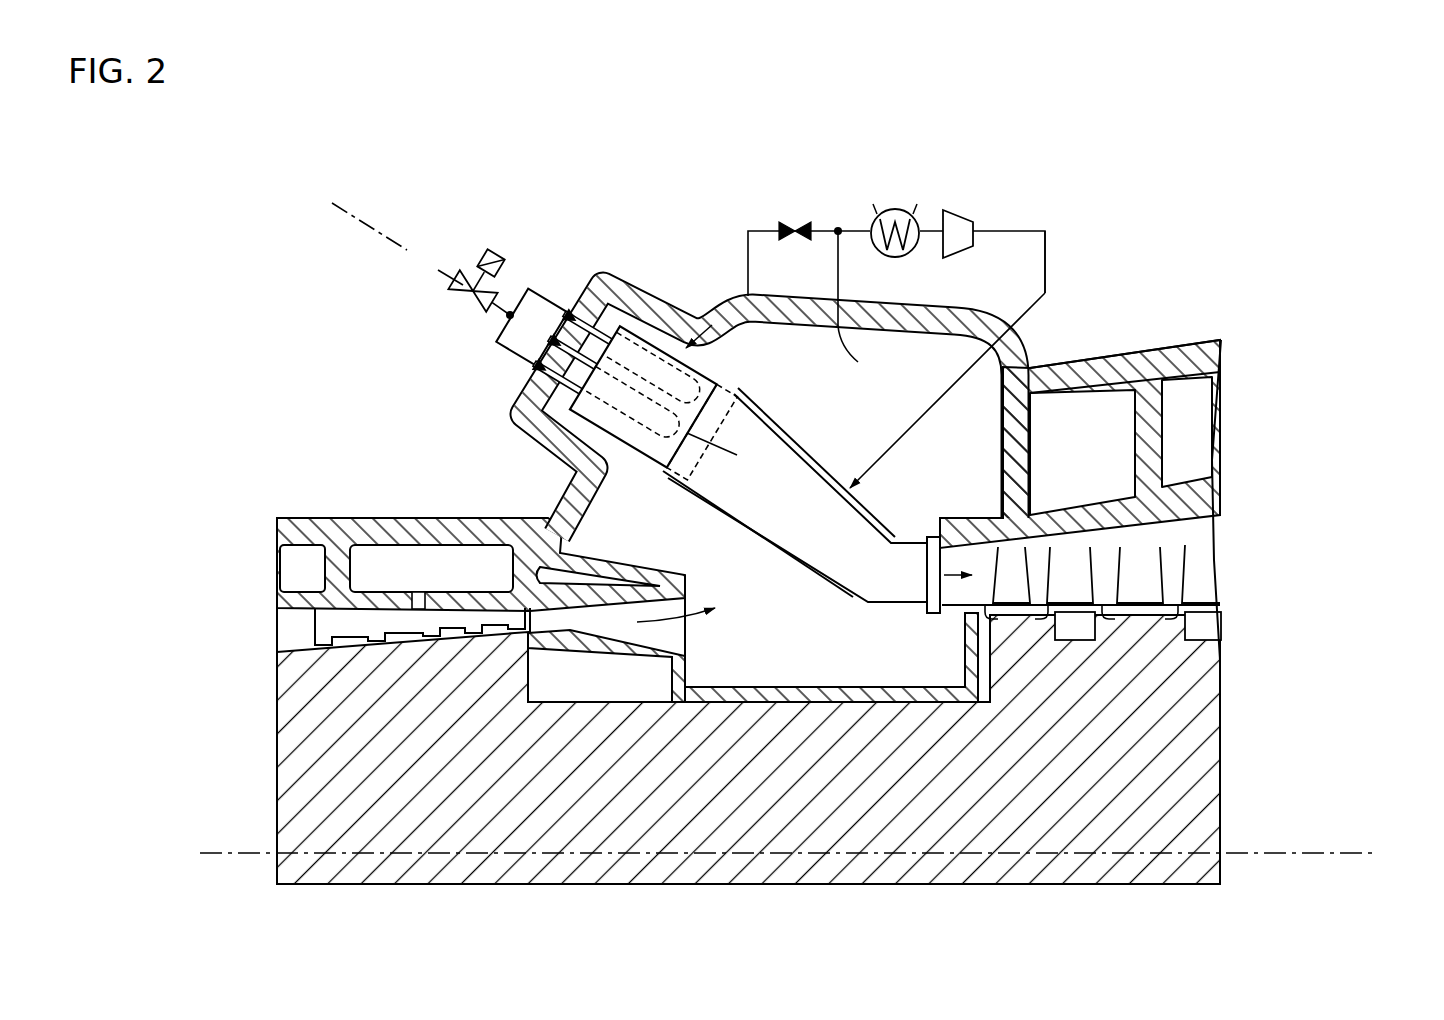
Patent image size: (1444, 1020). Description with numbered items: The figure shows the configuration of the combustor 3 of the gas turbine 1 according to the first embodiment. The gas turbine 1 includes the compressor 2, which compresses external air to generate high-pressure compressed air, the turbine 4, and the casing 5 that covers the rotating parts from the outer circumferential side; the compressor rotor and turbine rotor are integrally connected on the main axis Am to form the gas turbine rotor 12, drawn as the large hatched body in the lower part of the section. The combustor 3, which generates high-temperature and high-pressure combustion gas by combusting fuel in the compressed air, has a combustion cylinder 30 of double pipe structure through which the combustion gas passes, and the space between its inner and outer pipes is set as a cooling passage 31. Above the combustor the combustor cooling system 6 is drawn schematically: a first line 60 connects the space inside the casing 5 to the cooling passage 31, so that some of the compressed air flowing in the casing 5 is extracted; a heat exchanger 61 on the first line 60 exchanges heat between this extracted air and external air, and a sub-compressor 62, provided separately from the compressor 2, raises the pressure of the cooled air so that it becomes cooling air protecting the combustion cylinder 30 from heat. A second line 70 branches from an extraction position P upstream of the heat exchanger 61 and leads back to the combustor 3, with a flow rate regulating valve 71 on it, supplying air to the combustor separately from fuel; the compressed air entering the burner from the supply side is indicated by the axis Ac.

The gas turbine 1 is at (246, 172).
The compressor 2 is at (328, 497).
The combustor 3 is at (920, 488).
The turbine 4 is at (1231, 260).
The casing 5 is at (1190, 343).
The combustor cooling system 6 is at (939, 265).
The gas turbine rotor 12 is at (585, 845).
The combustion cylinder 30 is at (765, 410).
The cooling passage 31 is at (799, 566).
The first line 60 is at (1043, 228).
The heat exchanger 61 is at (894, 208).
The sub-compressor 62 is at (958, 208).
The second line 70 is at (749, 228).
The flow rate regulating valve 71 is at (795, 222).
The extraction position P is at (849, 312).
The compressed air axis Ac is at (350, 213).
The main axis Am is at (1360, 852).